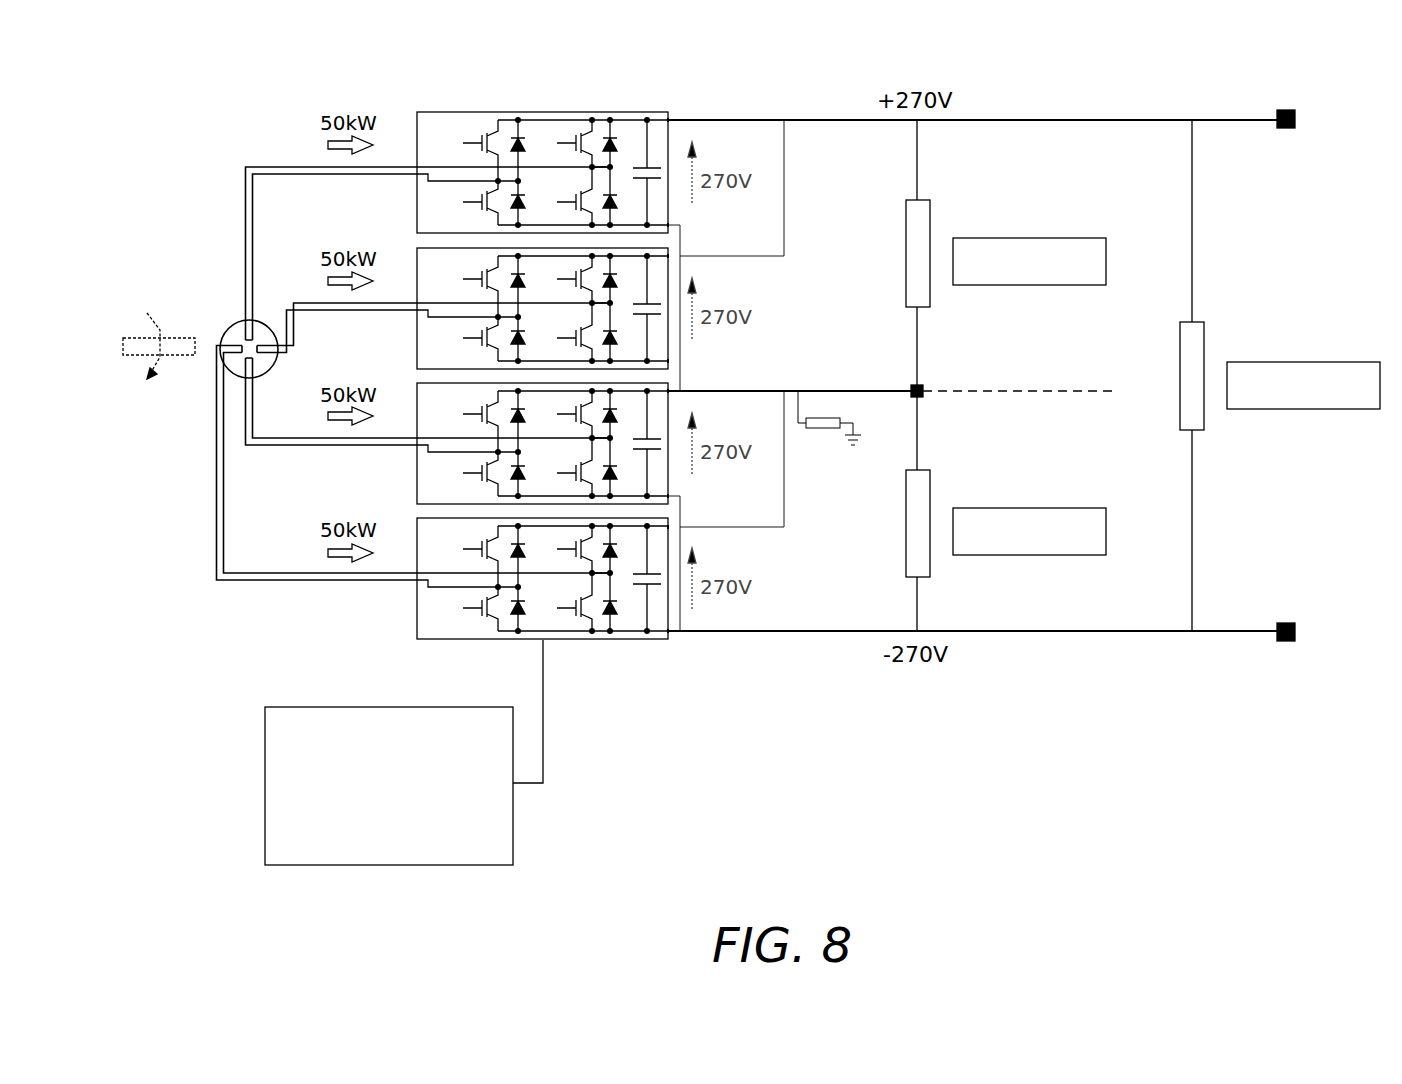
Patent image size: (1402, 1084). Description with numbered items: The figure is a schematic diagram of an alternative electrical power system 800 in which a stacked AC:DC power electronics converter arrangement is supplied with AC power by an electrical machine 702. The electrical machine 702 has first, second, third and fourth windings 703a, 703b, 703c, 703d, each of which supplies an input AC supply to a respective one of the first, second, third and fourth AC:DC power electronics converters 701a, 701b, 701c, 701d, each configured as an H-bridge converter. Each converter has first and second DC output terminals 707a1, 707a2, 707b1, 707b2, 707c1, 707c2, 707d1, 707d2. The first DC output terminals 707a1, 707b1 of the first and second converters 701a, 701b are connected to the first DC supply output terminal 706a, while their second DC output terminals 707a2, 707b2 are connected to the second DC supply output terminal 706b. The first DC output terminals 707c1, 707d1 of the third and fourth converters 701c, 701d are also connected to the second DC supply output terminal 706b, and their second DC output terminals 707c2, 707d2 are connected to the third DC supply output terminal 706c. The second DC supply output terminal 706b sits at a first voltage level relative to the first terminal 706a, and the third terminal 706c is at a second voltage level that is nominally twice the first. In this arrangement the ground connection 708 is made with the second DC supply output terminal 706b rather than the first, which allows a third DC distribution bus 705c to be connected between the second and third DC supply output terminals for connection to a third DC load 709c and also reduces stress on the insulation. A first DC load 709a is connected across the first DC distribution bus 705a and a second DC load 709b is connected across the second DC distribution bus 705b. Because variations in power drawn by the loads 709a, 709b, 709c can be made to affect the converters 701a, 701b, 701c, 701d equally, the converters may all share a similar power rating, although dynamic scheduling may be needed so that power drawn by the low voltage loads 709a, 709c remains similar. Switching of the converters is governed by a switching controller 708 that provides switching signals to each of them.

The electrical power system 800 is at (228, 88).
The first AC:DC power electronics converter 701a is at (418, 624).
The second AC:DC power electronics converter 701b is at (418, 467).
The third AC:DC power electronics converter 701c is at (418, 332).
The fourth AC:DC power electronics converter 701d is at (418, 195).
The electrical machine 702 is at (234, 330).
The first winding 703a is at (227, 377).
The second winding 703b is at (268, 367).
The third winding 703c is at (260, 337).
The fourth winding 703d is at (236, 322).
The first DC distribution bus 705a is at (1029, 512).
The second DC distribution bus 705b is at (1303, 348).
The third DC distribution bus 705c is at (1029, 242).
The first DC supply output terminal 706a is at (1296, 633).
The second DC supply output terminal 706b is at (923, 388).
The third DC supply output terminal 706c is at (1296, 119).
The first DC output terminal 707a1 is at (670, 640).
The second DC output terminal 707a2 is at (723, 527).
The first DC output terminal 707b1 is at (682, 505).
The second DC output terminal 707b2 is at (688, 391).
The first DC output terminal 707c1 is at (683, 361).
The second DC output terminal 707c2 is at (733, 258).
The first DC output terminal 707d1 is at (682, 232).
The second DC output terminal 707d2 is at (672, 118).
The ground connection 708 is at (840, 438).
The first DC load 709a is at (906, 549).
The second DC load 709b is at (1180, 333).
The third DC load 709c is at (906, 213).